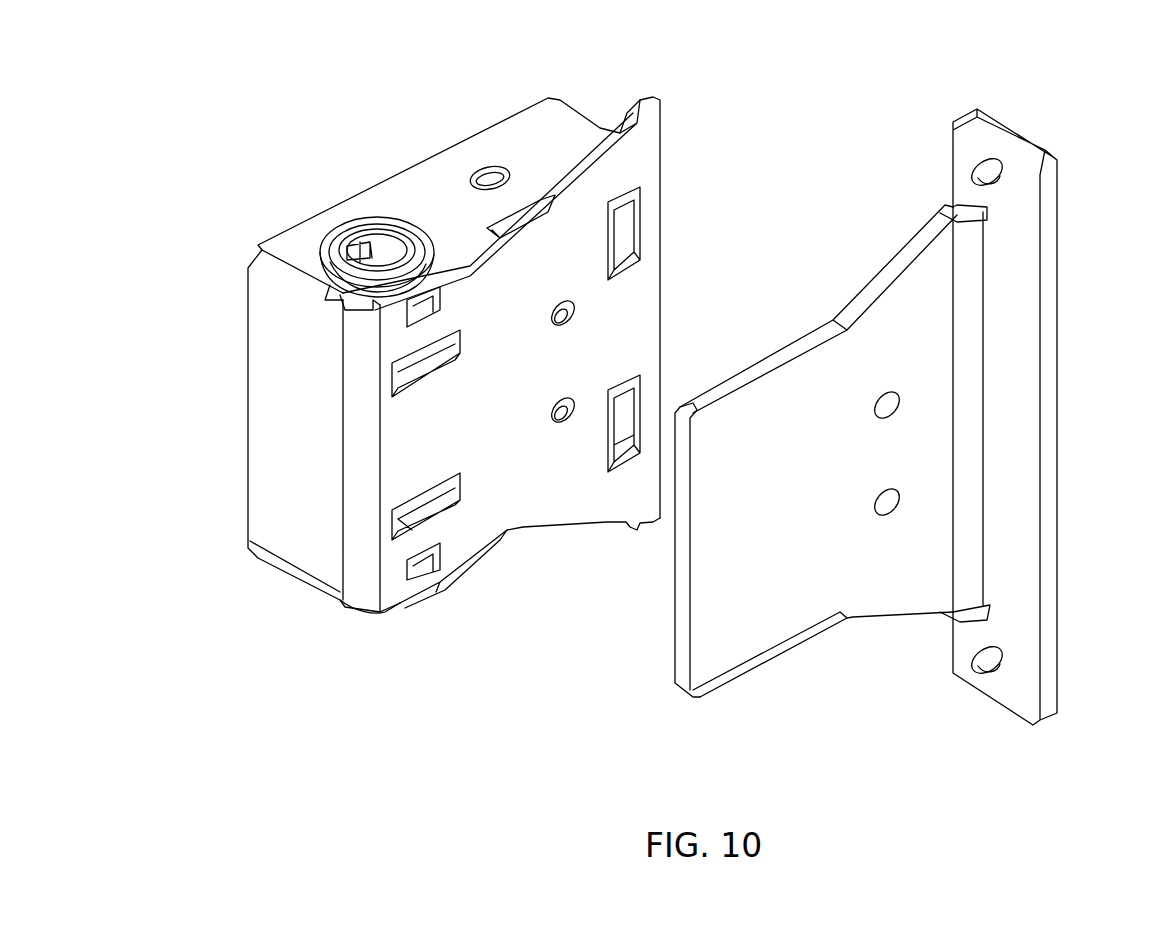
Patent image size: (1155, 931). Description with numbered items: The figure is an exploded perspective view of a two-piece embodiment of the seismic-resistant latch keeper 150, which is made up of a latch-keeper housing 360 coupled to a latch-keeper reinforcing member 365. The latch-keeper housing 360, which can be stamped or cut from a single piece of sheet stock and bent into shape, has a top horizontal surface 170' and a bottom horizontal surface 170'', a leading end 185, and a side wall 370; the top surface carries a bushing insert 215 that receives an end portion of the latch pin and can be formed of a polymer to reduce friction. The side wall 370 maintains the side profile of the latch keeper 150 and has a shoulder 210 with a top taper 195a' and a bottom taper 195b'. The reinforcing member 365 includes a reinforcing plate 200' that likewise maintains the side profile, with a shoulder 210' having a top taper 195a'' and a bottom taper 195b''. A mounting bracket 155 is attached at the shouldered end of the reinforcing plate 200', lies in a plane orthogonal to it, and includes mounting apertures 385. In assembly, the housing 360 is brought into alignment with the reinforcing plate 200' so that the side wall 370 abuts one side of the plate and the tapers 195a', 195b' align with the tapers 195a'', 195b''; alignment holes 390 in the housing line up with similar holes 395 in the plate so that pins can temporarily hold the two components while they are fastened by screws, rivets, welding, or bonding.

The seismic-resistant latch keeper 150 is at (428, 762).
The latch-keeper housing 360 is at (340, 133).
The latch-keeper reinforcing member 365 is at (1064, 108).
The top horizontal surface 170' is at (459, 301).
The bottom horizontal surface 170'' is at (341, 635).
The bushing insert 215 is at (328, 240).
The leading end 185 is at (268, 388).
The top taper 195a' is at (538, 179).
The bottom taper 195b' is at (530, 563).
The top taper 195a'' is at (818, 302).
The bottom taper 195b'' is at (823, 654).
The side wall 370 is at (660, 320).
The shoulder 210 is at (517, 383).
The shoulder 210' is at (804, 510).
The alignment holes 390 is at (549, 318).
The holes 395 is at (876, 412).
The mounting apertures 385 is at (968, 167).
The mounting bracket 155 is at (1046, 331).
The reinforcing plate 200' is at (792, 471).